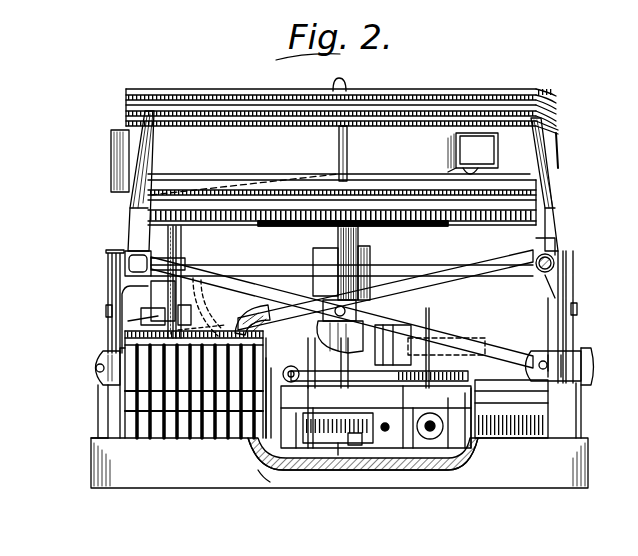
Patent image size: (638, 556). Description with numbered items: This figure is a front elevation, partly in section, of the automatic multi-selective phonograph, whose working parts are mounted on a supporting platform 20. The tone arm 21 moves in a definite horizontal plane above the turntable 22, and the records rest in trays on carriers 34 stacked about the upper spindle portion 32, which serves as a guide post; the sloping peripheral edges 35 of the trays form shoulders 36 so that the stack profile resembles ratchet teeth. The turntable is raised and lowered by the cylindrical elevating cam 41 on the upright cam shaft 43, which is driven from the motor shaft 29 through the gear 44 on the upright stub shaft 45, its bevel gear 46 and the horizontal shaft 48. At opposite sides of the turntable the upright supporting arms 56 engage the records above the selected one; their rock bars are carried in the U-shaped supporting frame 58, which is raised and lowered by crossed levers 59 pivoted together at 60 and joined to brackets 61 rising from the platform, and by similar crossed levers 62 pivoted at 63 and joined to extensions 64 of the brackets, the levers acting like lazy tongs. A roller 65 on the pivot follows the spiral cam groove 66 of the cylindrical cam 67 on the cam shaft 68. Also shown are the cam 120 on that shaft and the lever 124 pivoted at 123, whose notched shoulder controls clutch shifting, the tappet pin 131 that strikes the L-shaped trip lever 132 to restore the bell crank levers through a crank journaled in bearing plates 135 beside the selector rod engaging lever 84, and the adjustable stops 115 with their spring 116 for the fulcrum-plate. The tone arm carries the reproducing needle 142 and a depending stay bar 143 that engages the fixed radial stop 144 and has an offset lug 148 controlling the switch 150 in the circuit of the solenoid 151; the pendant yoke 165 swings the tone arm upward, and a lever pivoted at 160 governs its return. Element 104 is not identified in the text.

The supporting platform 20 is at (136, 480).
The tone arm 21 is at (339, 169).
The turntable 22 is at (487, 218).
The motor shaft 29 is at (305, 330).
The upper portion of the spindle 32 is at (340, 142).
The record carriers 34 is at (363, 255).
The sloping peripheral edges 35 is at (118, 106).
The shoulders 36 is at (548, 100).
The elevating cam 41 is at (404, 430).
The cam shaft 43 is at (330, 447).
The gear 44 is at (146, 117).
The stub shaft 45 is at (112, 290).
The bevel gear 46 is at (436, 330).
The horizontal shaft 48 is at (479, 431).
The supporting arms 56 is at (118, 162).
The supporting frame 58 is at (408, 266).
The crossed levers 59 is at (108, 276).
The pivot 60 is at (98, 303).
The brackets 61 is at (90, 383).
The crossed levers 62 is at (425, 325).
The pivot 63 is at (359, 356).
The extensions 64 is at (86, 350).
The roller 65 is at (300, 262).
The cam groove 66 is at (289, 358).
The cylindrical cam 67 is at (379, 363).
The cam shaft 68 is at (330, 292).
The selector rod engaging lever 84 is at (122, 400).
The rod 104 is at (250, 425).
The adjustable stops 115 is at (435, 425).
The spring 116 is at (425, 435).
The cam 120 is at (380, 430).
The pivot 123 is at (257, 480).
The lever 124 is at (320, 445).
The tappet pin 131 is at (290, 445).
The trip lever 132 is at (345, 440).
The bearing plates 135 is at (115, 415).
The reproducing needle 142 is at (448, 155).
The stay bar 143 is at (172, 237).
The radial stop 144 is at (305, 445).
The offset lug 148 is at (187, 283).
The switch 150 is at (240, 313).
The solenoid 151 is at (500, 430).
The pivot 160 is at (467, 372).
The pendant yoke 165 is at (150, 240).